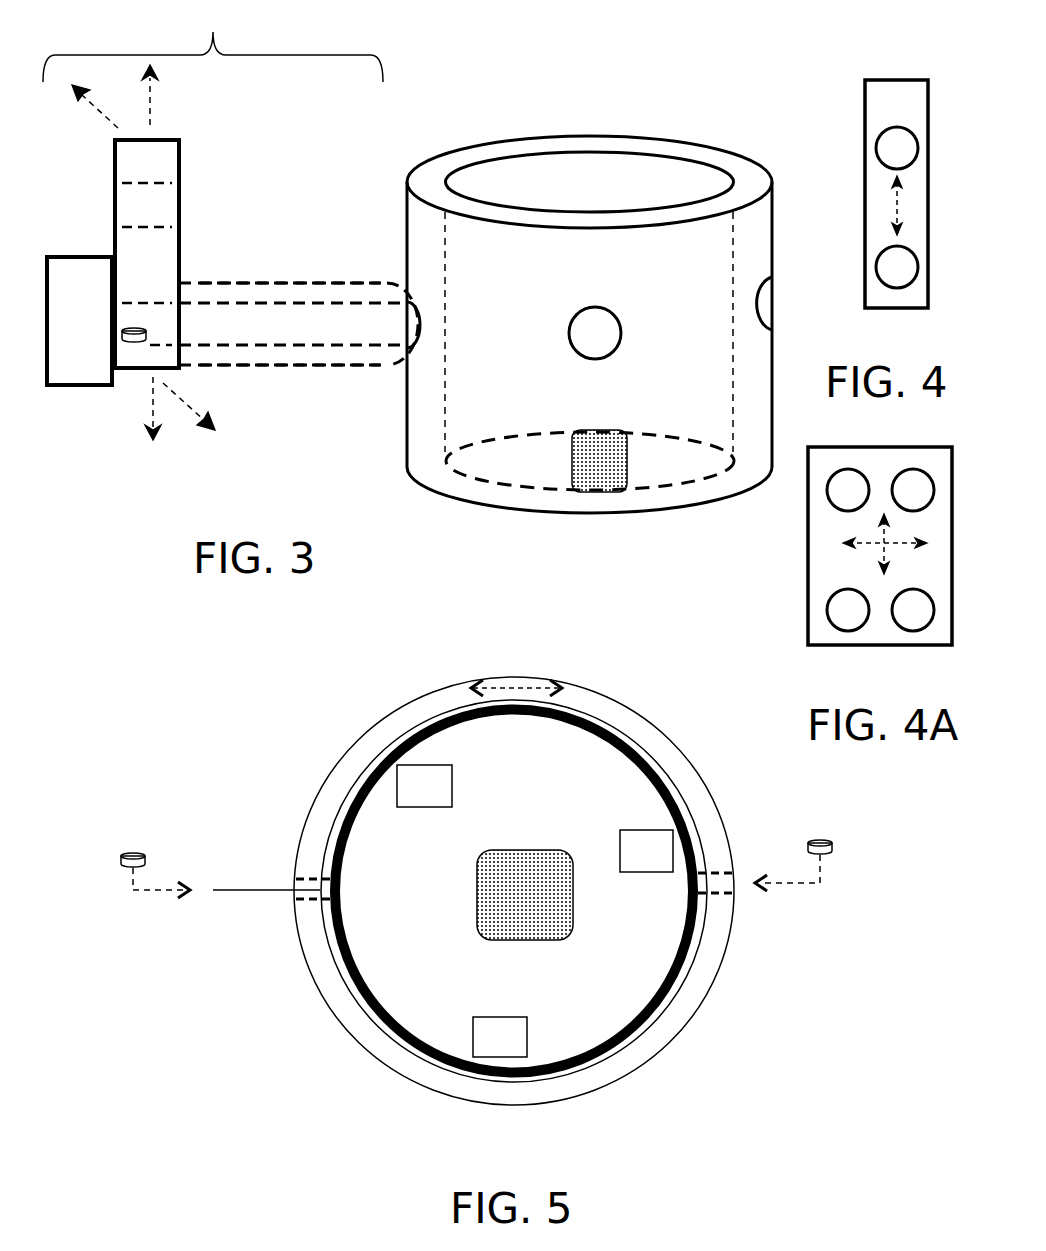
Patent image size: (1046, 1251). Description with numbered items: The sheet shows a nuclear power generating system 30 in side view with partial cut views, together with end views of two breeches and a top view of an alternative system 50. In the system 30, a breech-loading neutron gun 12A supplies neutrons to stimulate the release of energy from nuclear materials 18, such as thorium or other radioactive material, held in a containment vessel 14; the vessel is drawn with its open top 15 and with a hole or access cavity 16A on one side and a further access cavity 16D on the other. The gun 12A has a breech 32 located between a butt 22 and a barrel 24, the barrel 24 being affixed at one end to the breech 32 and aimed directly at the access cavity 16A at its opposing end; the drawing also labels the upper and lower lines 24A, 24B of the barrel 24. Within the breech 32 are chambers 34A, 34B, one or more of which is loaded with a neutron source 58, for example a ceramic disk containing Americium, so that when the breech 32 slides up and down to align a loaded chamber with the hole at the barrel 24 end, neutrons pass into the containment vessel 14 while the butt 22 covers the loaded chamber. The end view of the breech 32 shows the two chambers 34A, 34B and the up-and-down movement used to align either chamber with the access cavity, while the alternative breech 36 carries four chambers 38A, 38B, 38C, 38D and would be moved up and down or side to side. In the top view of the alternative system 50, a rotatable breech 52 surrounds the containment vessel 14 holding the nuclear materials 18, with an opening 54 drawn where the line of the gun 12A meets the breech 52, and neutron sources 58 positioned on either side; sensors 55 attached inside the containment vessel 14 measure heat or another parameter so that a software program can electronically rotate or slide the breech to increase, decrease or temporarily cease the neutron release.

In FIG. 3, the breech-loading neutron gun 12A is at (213, 221).
In FIG. 5, the breech-loading neutron gun 12A is at (235, 888).
In FIG. 3, the containment vessel 14 is at (419, 470).
In FIG. 5, the containment vessel 14 is at (660, 772).
In FIG. 3, the open top of container 15 is at (573, 172).
In FIG. 3, the access cavity 16A is at (420, 328).
In FIG. 3, the access cavity 16D is at (622, 330).
In FIG. 3, the nuclear materials 18 is at (586, 474).
In FIG. 5, the nuclear materials 18 is at (512, 908).
In FIG. 3, the butt 22 is at (66, 350).
In FIG. 3, the barrel 24 is at (300, 322).
In FIG. 3, the conduit upper wall 24A is at (270, 283).
In FIG. 3, the conduit lower wall 24B is at (270, 358).
In FIG. 3, the nuclear power generating system 30 is at (232, 490).
In FIG. 3, the breech 32 is at (132, 280).
In FIG. 4, the breech 32 is at (878, 353).
In FIG. 3, the chamber 34A is at (167, 203).
In FIG. 4, the chamber 34A is at (880, 159).
In FIG. 3, the chamber 34B is at (157, 337).
In FIG. 4, the chamber 34B is at (880, 278).
In FIG. 4A, the alternative breech 36 is at (863, 692).
In FIG. 4A, the chamber 38A is at (831, 501).
In FIG. 4A, the chamber 38B is at (896, 501).
In FIG. 4A, the chamber 38C is at (831, 621).
In FIG. 4A, the chamber 38D is at (896, 621).
In FIG. 5, the nuclear power generating system 50 is at (496, 1173).
In FIG. 5, the breech 52 is at (712, 820).
In FIG. 5, the opening 54 is at (302, 878).
In FIG. 5, the sensors 55 is at (410, 799).
In FIG. 3, the neutron source 58 is at (115, 338).
In FIG. 5, the neutron source 58 is at (133, 853).